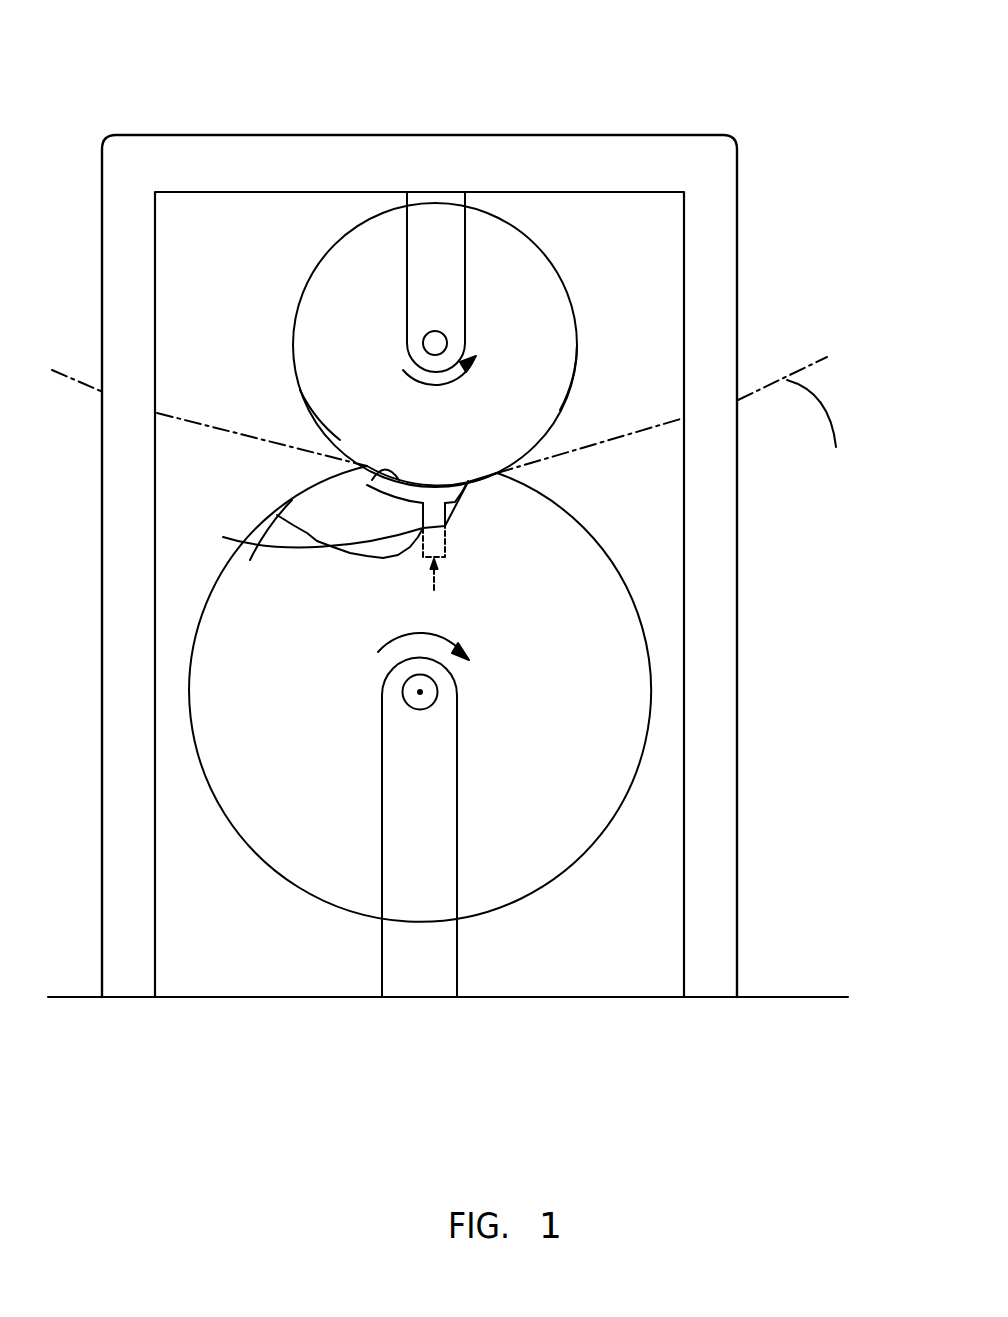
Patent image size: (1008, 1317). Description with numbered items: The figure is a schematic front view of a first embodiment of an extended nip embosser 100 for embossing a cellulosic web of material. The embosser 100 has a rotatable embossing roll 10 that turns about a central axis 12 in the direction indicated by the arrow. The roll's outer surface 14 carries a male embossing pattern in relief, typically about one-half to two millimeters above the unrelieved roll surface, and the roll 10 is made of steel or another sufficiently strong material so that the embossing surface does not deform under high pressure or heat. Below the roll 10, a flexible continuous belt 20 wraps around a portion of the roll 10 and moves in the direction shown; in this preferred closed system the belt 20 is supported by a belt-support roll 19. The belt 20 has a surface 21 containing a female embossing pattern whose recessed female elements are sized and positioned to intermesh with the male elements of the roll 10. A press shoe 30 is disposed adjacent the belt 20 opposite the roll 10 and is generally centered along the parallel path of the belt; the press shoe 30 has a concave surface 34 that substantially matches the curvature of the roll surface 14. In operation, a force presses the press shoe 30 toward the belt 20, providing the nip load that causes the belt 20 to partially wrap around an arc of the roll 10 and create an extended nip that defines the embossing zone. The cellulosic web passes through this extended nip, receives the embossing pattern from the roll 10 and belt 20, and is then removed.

The extended nip embosser 100 is at (768, 101).
The embossing roll 10 is at (507, 268).
The central axis 12 is at (427, 337).
The roll outer surface 14 is at (575, 375).
The belt-support roll 19 is at (567, 548).
The flexible continuous belt 20 is at (327, 482).
The belt surface 21 is at (292, 500).
The press shoe 30 is at (343, 543).
The concave surface 34 is at (370, 480).